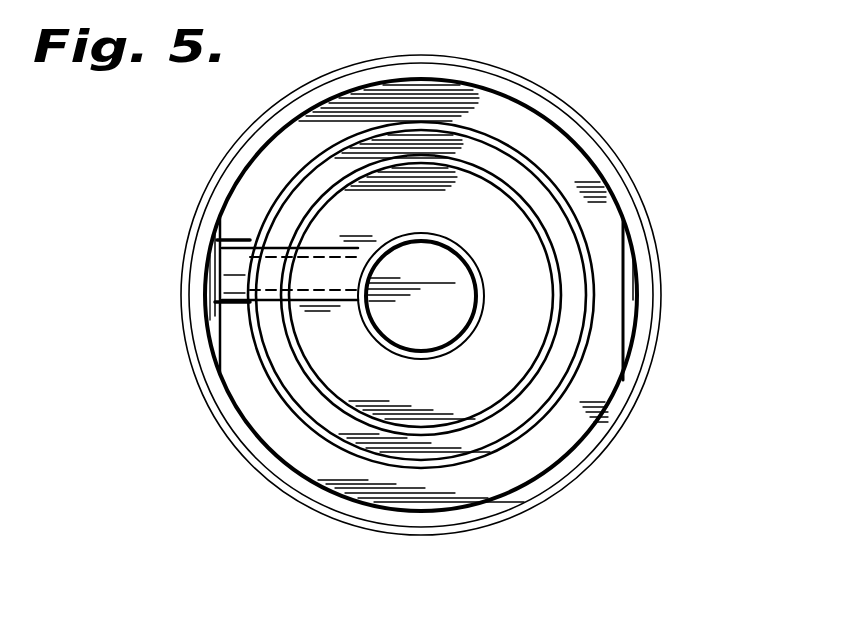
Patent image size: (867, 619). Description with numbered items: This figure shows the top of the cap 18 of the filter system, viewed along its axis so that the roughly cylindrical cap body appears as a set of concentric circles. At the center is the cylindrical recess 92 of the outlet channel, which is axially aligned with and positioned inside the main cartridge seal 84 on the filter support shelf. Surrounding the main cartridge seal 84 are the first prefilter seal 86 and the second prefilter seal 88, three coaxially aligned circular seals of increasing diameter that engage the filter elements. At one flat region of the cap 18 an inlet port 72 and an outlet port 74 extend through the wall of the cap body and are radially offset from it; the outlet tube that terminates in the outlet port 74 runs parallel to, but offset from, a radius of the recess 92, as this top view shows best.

The cap 18 is at (527, 516).
The inlet port 72 is at (188, 333).
The outlet port 74 is at (188, 262).
The main cartridge seal 84 is at (477, 273).
The first prefilter seal 86 is at (507, 180).
The second prefilter seal 88 is at (568, 380).
The cylindrical recess 92 is at (447, 322).